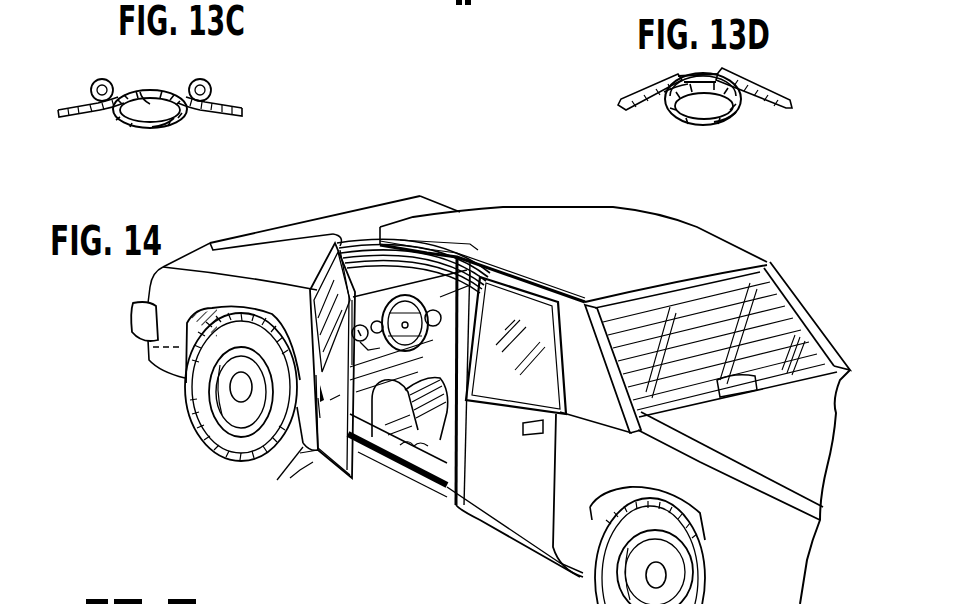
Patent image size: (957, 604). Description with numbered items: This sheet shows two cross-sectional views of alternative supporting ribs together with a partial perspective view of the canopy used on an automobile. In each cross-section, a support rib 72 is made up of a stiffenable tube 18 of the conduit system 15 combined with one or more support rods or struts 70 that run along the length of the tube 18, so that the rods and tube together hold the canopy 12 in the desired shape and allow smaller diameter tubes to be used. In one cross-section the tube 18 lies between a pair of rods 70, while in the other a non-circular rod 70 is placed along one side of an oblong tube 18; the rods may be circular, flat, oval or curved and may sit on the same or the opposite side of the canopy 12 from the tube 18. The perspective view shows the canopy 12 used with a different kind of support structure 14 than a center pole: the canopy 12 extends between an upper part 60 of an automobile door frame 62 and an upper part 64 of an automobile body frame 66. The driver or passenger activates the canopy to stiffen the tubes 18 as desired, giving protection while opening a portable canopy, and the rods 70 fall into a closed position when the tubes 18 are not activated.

In FIG. 13C, the canopy 12 is at (240, 110).
In FIG. 13D, the canopy 12 is at (777, 98).
In FIG. 14, the canopy 12 is at (368, 242).
In FIG. 14, the support structure 14 is at (307, 300).
In FIG. 13C, the conduit system 15 is at (133, 126).
In FIG. 13D, the conduit system 15 is at (695, 118).
In FIG. 13C, the stiffenable tubes 18 is at (184, 118).
In FIG. 13D, the stiffenable tubes 18 is at (740, 116).
In FIG. 14, the upper part of automobile door frame 60 is at (337, 233).
In FIG. 14, the automobile door frame 62 is at (307, 452).
In FIG. 14, the upper part of automobile body frame 64 is at (423, 257).
In FIG. 14, the automobile body frame 66 is at (388, 470).
In FIG. 13C, the support rods or struts 70 is at (93, 82).
In FIG. 13D, the support rods or struts 70 is at (720, 70).
In FIG. 13C, the support ribs 72 is at (192, 80).
In FIG. 13D, the support ribs 72 is at (668, 86).